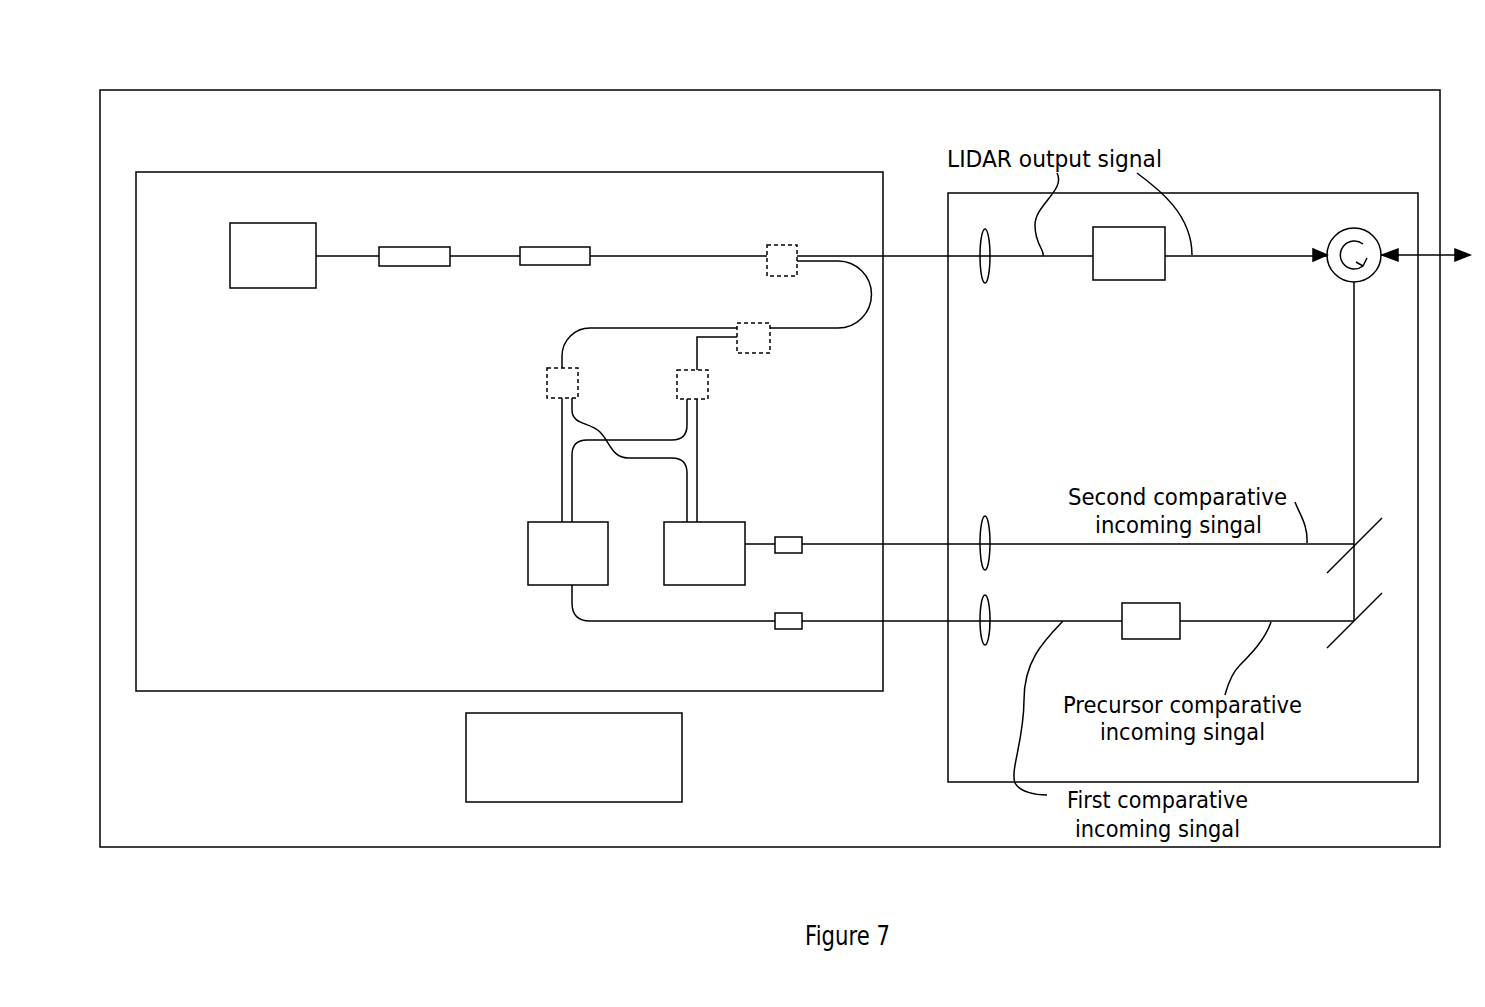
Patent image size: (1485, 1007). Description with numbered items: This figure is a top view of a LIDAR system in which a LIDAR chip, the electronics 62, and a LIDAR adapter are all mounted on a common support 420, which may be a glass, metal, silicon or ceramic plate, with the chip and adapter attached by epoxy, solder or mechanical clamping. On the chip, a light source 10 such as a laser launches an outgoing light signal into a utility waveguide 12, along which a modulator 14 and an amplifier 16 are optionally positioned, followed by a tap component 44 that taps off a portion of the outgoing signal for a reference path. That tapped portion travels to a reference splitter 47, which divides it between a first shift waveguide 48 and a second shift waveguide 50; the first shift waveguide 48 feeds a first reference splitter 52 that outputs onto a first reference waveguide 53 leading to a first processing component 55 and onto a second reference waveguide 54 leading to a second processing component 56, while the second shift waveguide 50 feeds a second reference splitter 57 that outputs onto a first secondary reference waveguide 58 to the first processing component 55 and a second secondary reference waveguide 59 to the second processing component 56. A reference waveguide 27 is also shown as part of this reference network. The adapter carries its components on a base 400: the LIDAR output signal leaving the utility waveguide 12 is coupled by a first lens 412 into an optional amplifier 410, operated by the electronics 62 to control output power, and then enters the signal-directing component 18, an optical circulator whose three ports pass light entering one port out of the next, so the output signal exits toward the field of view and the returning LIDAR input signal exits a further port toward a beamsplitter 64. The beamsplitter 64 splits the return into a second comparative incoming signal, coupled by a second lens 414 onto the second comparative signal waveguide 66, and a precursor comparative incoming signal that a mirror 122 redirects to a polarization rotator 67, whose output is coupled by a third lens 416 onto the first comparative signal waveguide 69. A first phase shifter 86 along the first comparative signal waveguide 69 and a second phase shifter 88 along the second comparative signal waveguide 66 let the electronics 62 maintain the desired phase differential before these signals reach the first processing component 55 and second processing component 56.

The common support 420 is at (1247, 90).
The light source 10 is at (253, 288).
The utility waveguide 12 is at (338, 255).
The modulator 14 is at (412, 247).
The amplifier 16 is at (540, 247).
The tap component 44 is at (785, 245).
The reference waveguide 27 is at (812, 328).
The reference splitter 47 is at (748, 323).
The first shift waveguide 48 is at (648, 328).
The second shift waveguide 50 is at (703, 338).
The first reference splitter 52 is at (547, 385).
The second reference splitter 57 is at (677, 387).
The first reference waveguide 53 is at (562, 480).
The first secondary reference waveguide 58 is at (572, 488).
The second reference waveguide 54 is at (687, 492).
The second secondary reference waveguide 59 is at (697, 496).
The first processing component 55 is at (528, 546).
The second processing component 56 is at (664, 528).
The second phase shifter 88 is at (778, 537).
The first phase shifter 86 is at (778, 630).
The second comparative signal waveguide 66 is at (843, 544).
The first comparative signal waveguide 69 is at (835, 623).
The electronics 62 is at (466, 740).
The base 400 is at (1270, 193).
The first lens 412 is at (990, 263).
The amplifier 410 is at (1160, 281).
The signal-directing component 18 is at (1334, 224).
The second lens 414 is at (987, 517).
The third lens 416 is at (987, 645).
The beamsplitter 64 is at (1370, 518).
The mirror 122 is at (1358, 622).
The polarization rotator 67 is at (1180, 603).